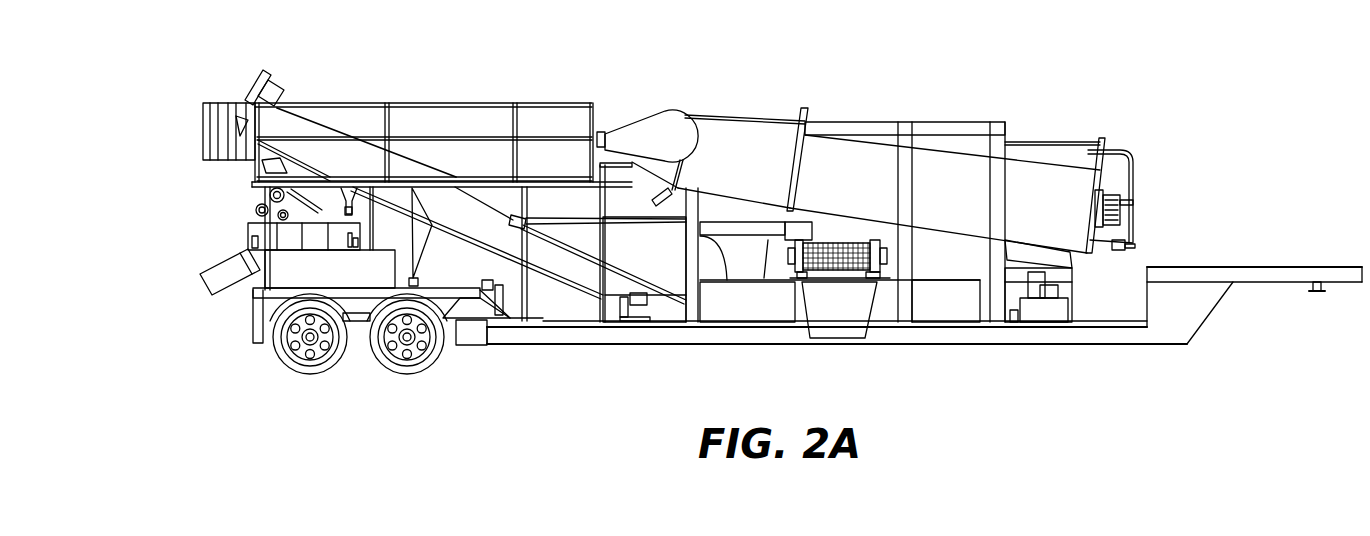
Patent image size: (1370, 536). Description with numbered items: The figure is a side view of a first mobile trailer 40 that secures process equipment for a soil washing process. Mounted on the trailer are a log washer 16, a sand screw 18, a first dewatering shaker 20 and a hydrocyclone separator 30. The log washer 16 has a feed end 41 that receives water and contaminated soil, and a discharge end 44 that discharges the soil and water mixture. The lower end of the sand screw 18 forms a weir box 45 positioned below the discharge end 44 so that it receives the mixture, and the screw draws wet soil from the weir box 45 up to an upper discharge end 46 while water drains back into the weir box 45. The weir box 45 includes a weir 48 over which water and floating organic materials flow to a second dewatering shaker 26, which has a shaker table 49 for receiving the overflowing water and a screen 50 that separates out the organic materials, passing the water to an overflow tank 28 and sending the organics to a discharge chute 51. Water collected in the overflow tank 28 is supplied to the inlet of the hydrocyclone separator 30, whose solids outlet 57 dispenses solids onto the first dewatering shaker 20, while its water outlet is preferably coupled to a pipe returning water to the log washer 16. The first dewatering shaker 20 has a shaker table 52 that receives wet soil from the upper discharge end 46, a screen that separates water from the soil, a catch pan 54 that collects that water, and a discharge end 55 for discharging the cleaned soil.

The log washer 16 is at (960, 150).
The sand screw 18 is at (407, 172).
The first dewatering shaker 20 is at (248, 237).
The second dewatering shaker 26 is at (858, 268).
The overflow tank 28 is at (778, 305).
The hydrocyclone separator 30 is at (348, 197).
The first mobile trailer 40 is at (1196, 124).
The feed end 41 is at (1030, 210).
The discharge end 44 is at (720, 170).
The weir box 45 is at (630, 254).
The upper discharge end 46 is at (287, 123).
The weir 48 is at (722, 232).
The shaker table 49 is at (880, 248).
The screen 50 is at (843, 250).
The discharge chute 51 is at (843, 318).
The shaker table 52 is at (290, 245).
The catch pan 54 is at (367, 277).
The discharge end 55 is at (200, 278).
The solids outlet 57 is at (333, 212).